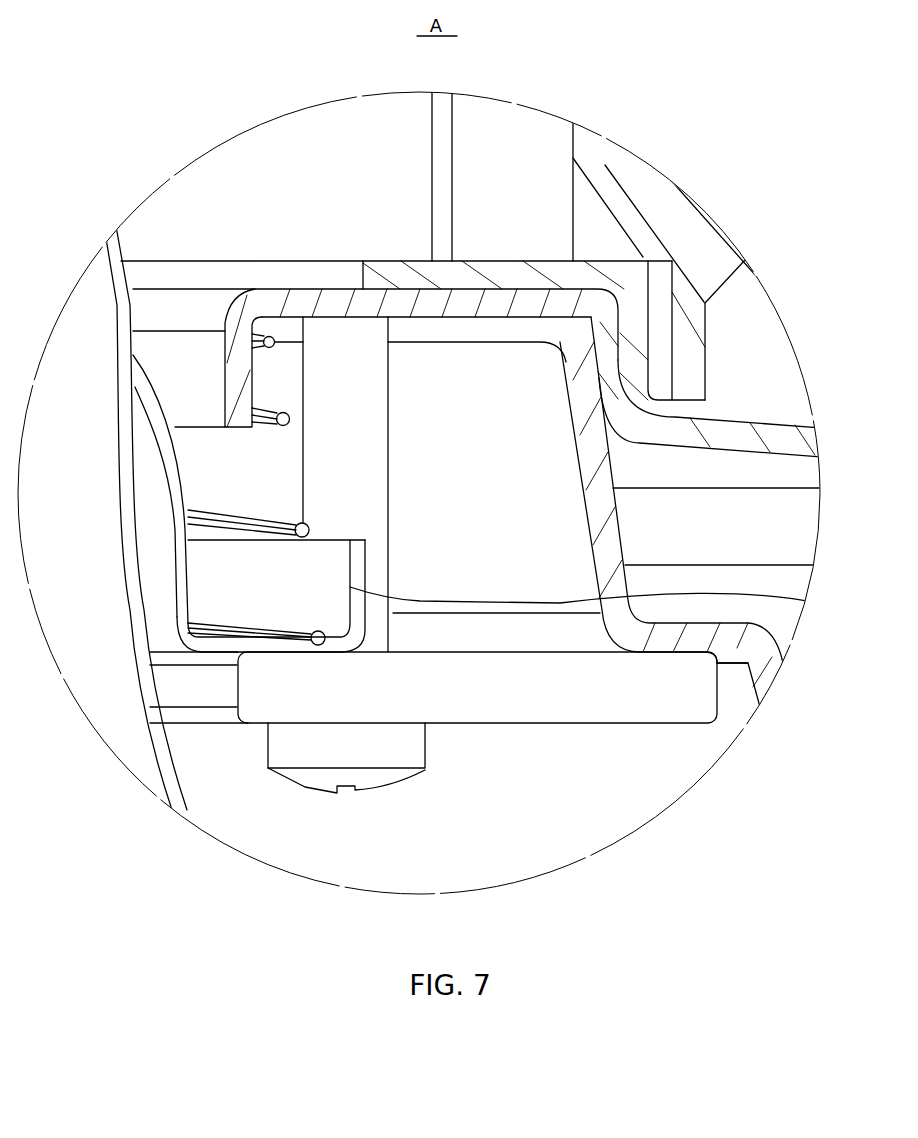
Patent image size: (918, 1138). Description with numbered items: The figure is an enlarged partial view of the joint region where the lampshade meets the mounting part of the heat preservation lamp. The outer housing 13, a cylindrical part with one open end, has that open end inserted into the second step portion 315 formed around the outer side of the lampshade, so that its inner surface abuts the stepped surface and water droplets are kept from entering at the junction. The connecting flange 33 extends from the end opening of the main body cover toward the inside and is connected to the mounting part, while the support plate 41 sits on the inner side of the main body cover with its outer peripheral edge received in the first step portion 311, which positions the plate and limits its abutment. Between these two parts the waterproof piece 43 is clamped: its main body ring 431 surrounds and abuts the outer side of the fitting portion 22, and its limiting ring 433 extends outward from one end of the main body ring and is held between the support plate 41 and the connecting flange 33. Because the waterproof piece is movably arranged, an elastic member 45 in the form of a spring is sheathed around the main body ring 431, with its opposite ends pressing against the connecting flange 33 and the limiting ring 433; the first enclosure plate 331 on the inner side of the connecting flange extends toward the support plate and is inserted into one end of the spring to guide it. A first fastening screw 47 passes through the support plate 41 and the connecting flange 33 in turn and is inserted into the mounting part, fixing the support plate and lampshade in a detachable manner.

The outer housing 13 is at (605, 166).
The fitting portion 22 is at (132, 535).
The connecting flange 33 is at (400, 272).
The elastic member 45 is at (267, 337).
The second step portion 315 is at (655, 306).
The first enclosure plate 331 is at (240, 366).
The support plate 41 is at (557, 690).
The first step portion 311 is at (732, 682).
The first fastening screw 47 is at (360, 750).
The waterproof piece 43 is at (65, 772).
The main body ring 431 is at (185, 578).
The limiting ring 433 is at (270, 645).